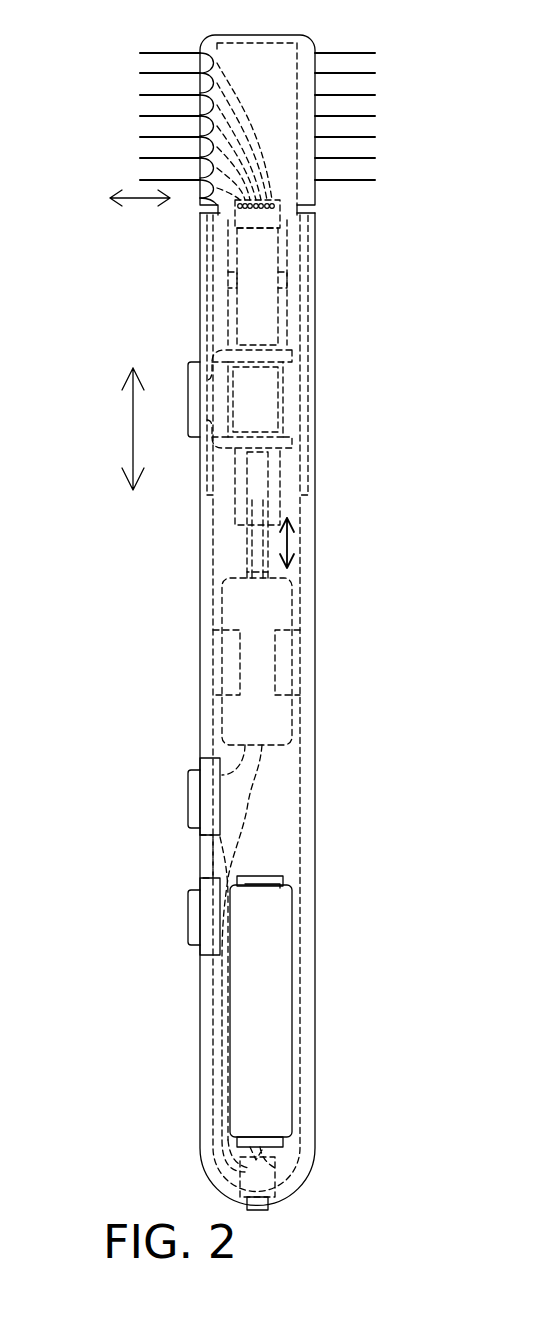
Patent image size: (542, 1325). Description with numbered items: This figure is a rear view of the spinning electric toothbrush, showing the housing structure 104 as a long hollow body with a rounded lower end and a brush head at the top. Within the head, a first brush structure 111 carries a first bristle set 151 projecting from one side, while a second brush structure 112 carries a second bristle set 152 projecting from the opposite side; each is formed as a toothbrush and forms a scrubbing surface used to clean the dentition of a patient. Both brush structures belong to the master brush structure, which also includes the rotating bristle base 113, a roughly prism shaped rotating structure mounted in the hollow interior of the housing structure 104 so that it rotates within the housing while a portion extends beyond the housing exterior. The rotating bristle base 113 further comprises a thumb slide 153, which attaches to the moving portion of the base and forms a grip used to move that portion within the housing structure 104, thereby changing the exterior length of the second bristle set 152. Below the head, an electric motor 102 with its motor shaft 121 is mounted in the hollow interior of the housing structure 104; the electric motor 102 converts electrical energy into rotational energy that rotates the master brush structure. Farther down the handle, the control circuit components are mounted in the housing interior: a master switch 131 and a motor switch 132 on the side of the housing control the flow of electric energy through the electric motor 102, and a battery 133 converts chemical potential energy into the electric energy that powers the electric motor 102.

The electric motor 102 is at (260, 617).
The housing structure 104 is at (305, 843).
The first brush structure 111 is at (330, 45).
The second brush structure 112 is at (175, 45).
The rotating bristle base 113 is at (280, 245).
The motor shaft 121 is at (256, 548).
The master switch 131 is at (168, 920).
The motor switch 132 is at (188, 803).
The battery 133 is at (265, 1028).
The first bristle set 151 is at (360, 105).
The second bristle set 152 is at (140, 115).
The thumb slide 153 is at (188, 395).